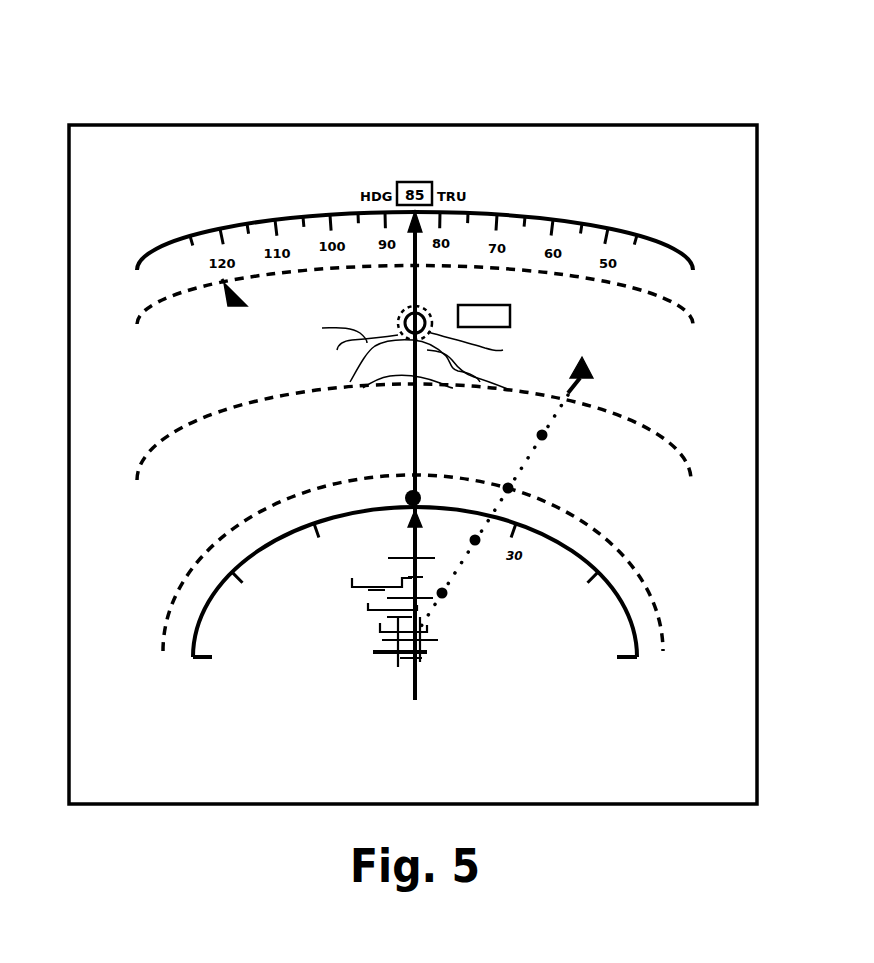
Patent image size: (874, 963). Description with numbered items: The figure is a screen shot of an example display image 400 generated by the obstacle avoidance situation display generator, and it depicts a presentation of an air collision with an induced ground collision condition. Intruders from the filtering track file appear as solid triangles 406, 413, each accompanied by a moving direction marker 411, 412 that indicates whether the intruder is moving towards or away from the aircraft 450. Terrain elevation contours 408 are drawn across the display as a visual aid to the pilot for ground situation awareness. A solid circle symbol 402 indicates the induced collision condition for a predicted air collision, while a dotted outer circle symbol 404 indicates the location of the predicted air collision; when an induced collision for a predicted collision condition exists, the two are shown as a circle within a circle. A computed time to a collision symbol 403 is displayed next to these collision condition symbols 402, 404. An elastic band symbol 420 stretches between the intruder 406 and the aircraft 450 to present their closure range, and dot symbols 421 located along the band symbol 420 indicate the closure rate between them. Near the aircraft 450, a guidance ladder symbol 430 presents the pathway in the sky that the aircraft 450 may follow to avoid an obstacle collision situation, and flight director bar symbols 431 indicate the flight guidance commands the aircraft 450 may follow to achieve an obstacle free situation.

The display image 400 is at (781, 110).
The solid circle symbol 402 is at (405, 313).
The computed time to a collision symbol 403 is at (510, 311).
The dotted outer circle symbol 404 is at (432, 313).
The solid triangle 406 is at (587, 367).
The terrain elevation contours 408 is at (407, 345).
The moving direction marker 411 is at (577, 385).
The moving direction marker 412 is at (213, 285).
The solid triangle 413 is at (232, 297).
The elastic band symbol 420 is at (563, 400).
The dot symbols 421 is at (545, 437).
The guidance ladder symbol 430 is at (353, 599).
The flight director bar symbols 431 is at (388, 654).
The aircraft 450 is at (415, 683).